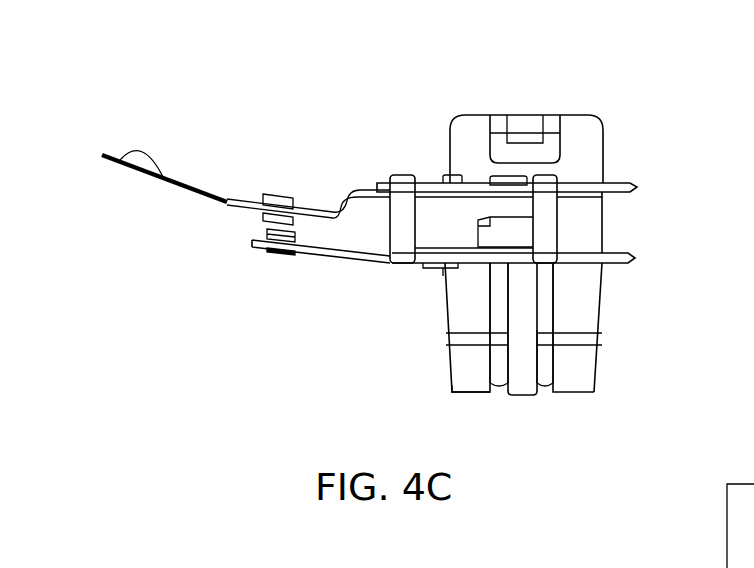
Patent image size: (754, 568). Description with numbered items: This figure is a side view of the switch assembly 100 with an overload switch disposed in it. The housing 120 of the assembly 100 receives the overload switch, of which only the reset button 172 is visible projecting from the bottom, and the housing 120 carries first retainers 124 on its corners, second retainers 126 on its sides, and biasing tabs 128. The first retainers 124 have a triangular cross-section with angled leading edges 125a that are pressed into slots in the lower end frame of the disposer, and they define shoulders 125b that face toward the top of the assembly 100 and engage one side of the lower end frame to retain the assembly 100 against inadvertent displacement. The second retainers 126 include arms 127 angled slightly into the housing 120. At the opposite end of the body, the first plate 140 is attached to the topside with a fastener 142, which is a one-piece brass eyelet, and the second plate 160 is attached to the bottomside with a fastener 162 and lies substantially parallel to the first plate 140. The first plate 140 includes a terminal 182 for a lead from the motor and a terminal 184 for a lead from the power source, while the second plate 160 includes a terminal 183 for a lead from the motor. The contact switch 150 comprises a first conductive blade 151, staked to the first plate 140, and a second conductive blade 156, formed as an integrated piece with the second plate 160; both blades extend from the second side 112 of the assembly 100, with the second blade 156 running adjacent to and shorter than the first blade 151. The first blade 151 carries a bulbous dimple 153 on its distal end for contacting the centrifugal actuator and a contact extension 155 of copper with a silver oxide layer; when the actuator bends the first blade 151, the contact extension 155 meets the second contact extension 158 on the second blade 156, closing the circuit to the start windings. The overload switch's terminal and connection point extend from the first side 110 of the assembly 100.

The switch assembly 100 is at (631, 88).
The first side 110 is at (669, 226).
The second side 112 is at (244, 329).
The housing 120 is at (465, 117).
The first retainers 124 is at (447, 374).
The angled leading edges 125a is at (457, 391).
The shoulders 125b is at (452, 331).
The second retainers 126 is at (525, 396).
The arms 127 is at (535, 356).
The biasing tabs 128 is at (530, 136).
The first plate 140 is at (603, 173).
The fastener 142 is at (502, 178).
The contact switch 150 is at (150, 242).
The first conductive blade 151 is at (197, 193).
The bulbous dimple 153 is at (140, 150).
The contact extension 155 is at (285, 199).
The second conductive blade 156 is at (347, 258).
The second contact extension 158 is at (262, 246).
The second plate 160 is at (562, 268).
The fastener 162 is at (423, 265).
The reset button 172 is at (500, 386).
The terminal 182 is at (638, 188).
The terminal 183 is at (637, 262).
The terminal 184 is at (462, 183).